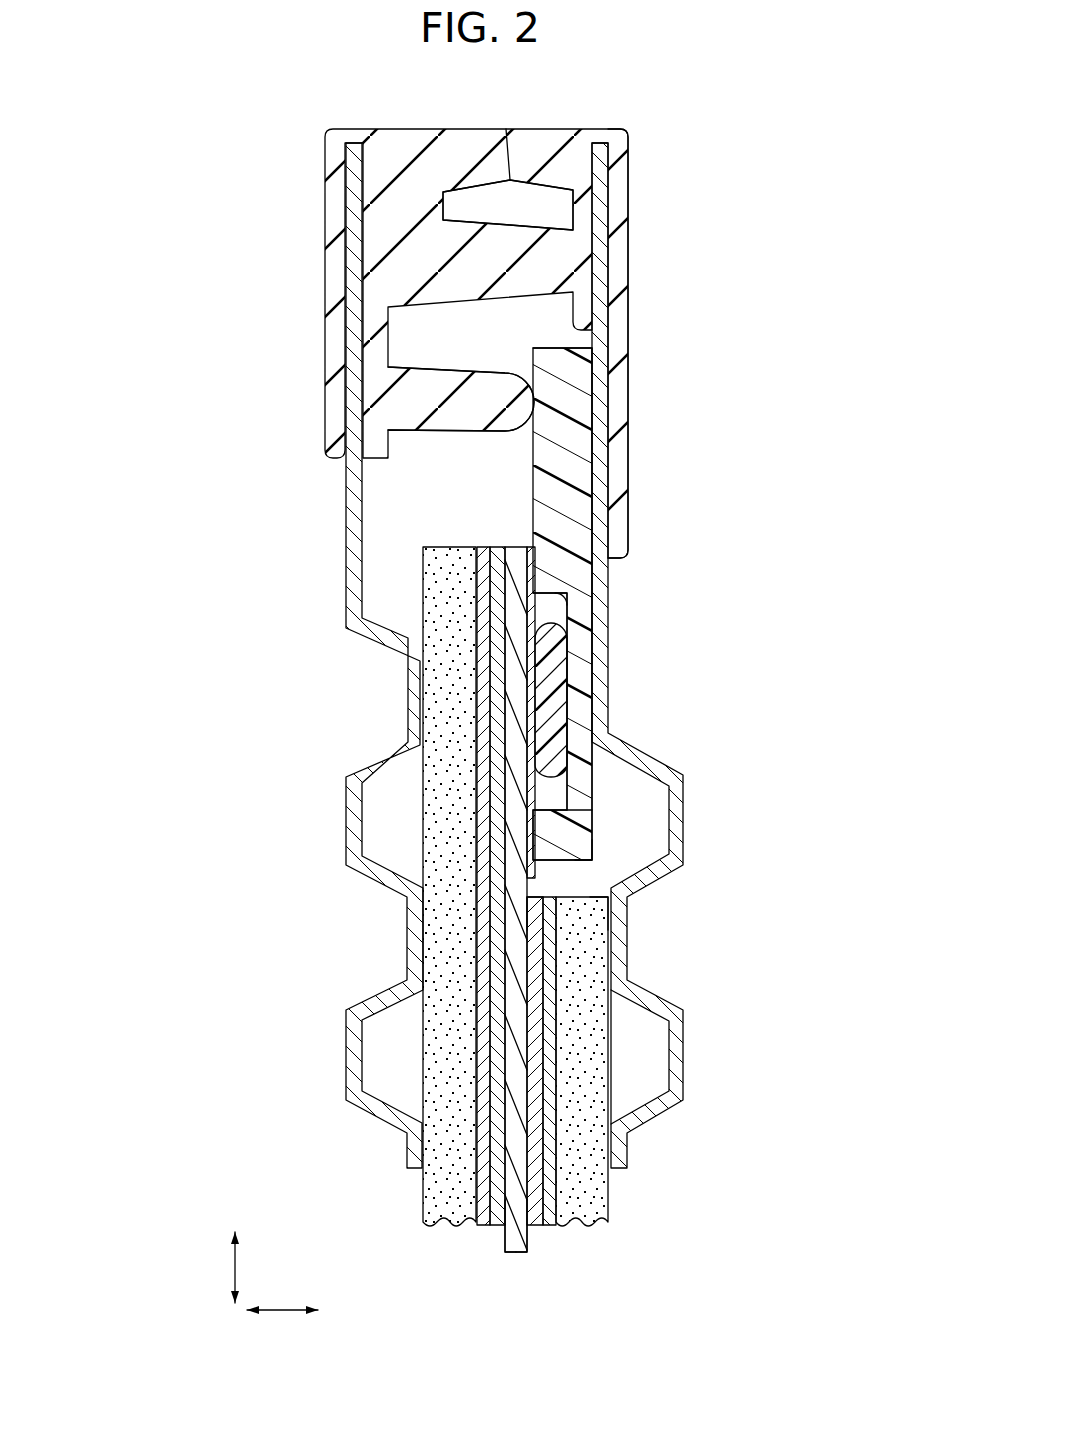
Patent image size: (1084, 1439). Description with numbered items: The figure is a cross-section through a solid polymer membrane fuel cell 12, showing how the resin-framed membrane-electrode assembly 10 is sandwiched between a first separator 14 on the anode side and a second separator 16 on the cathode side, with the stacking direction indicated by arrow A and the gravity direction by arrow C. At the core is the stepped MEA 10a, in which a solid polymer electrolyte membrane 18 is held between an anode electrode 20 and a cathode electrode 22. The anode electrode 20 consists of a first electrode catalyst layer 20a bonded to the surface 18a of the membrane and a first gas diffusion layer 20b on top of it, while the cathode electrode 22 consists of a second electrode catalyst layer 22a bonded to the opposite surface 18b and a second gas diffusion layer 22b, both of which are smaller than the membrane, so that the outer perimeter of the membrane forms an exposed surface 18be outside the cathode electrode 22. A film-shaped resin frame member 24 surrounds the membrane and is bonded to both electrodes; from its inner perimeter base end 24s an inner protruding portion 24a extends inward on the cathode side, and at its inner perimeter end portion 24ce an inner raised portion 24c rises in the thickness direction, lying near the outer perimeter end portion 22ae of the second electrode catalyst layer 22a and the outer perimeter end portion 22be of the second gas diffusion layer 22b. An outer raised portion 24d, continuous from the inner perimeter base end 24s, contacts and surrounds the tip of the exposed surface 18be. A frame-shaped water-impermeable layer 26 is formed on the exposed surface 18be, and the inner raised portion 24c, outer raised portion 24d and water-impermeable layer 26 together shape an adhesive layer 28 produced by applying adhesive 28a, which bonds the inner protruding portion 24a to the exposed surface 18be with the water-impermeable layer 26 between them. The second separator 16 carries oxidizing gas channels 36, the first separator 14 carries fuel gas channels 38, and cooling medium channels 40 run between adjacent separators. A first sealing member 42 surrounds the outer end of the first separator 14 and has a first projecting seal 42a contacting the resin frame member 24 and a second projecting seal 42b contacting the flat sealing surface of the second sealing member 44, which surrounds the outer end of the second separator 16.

The solid polymer membrane fuel cell 12 is at (606, 93).
The resin-framed membrane-electrode assembly 10 is at (421, 539).
The stepped MEA 10a is at (613, 1040).
The first separator 14 is at (344, 1061).
The second separator 16 is at (685, 1061).
The solid polymer electrolyte membrane 18 is at (514, 1256).
The surface 18a is at (505, 1251).
The surface 18b is at (528, 1251).
The exposed surface 18be is at (535, 573).
The anode electrode 20 is at (278, 1125).
The first electrode catalyst layer 20a is at (487, 1143).
The first gas diffusion layer 20b is at (421, 1179).
The cathode electrode 22 is at (762, 1125).
The second electrode catalyst layer 22a is at (537, 1143).
The outer perimeter end portion 22ae is at (543, 896).
The second gas diffusion layer 22b is at (611, 1179).
The outer perimeter end portion 22be is at (600, 895).
The resin frame member 24 is at (529, 482).
The inner protruding portion 24a is at (582, 653).
The inner raised portion 24c is at (545, 835).
The inner perimeter end portion 24ce is at (590, 862).
The outer raised portion 24d is at (557, 527).
The inner perimeter base end 24s is at (535, 608).
The water-impermeable layer 26 is at (535, 618).
The adhesive layer 28 is at (557, 720).
The adhesive 28a is at (627, 700).
The oxidizing gas channels 36 is at (652, 1020).
The fuel gas channels 38 is at (375, 1030).
The cooling medium channels 40 is at (395, 966).
The first sealing member 42 is at (323, 169).
The first projecting seal 42a is at (440, 393).
The second projecting seal 42b is at (560, 252).
The second sealing member 44 is at (630, 167).